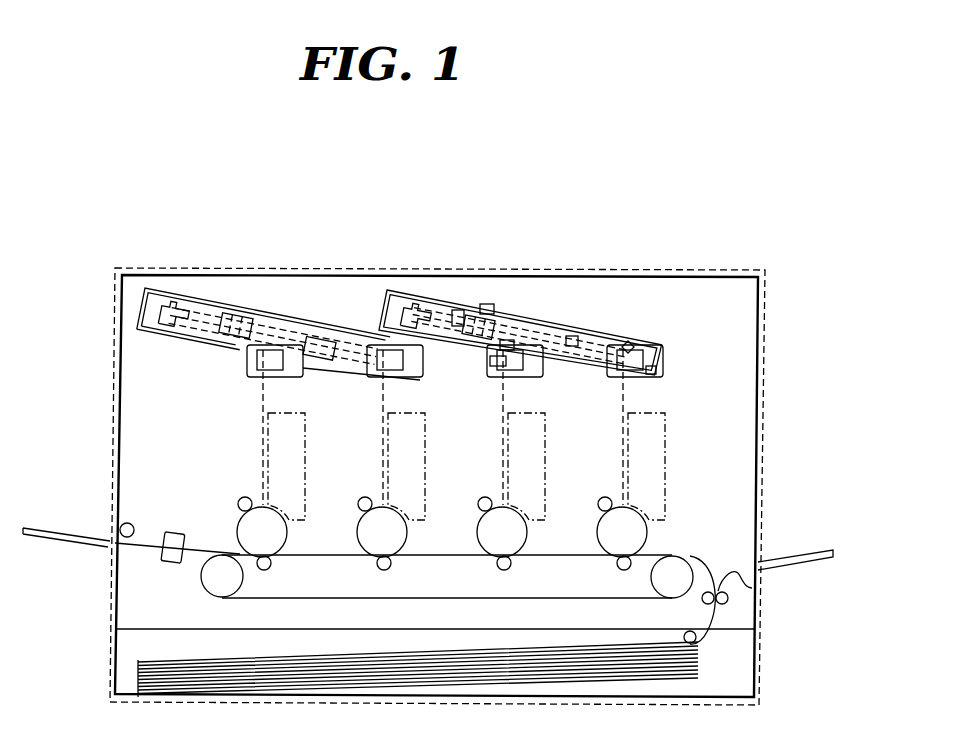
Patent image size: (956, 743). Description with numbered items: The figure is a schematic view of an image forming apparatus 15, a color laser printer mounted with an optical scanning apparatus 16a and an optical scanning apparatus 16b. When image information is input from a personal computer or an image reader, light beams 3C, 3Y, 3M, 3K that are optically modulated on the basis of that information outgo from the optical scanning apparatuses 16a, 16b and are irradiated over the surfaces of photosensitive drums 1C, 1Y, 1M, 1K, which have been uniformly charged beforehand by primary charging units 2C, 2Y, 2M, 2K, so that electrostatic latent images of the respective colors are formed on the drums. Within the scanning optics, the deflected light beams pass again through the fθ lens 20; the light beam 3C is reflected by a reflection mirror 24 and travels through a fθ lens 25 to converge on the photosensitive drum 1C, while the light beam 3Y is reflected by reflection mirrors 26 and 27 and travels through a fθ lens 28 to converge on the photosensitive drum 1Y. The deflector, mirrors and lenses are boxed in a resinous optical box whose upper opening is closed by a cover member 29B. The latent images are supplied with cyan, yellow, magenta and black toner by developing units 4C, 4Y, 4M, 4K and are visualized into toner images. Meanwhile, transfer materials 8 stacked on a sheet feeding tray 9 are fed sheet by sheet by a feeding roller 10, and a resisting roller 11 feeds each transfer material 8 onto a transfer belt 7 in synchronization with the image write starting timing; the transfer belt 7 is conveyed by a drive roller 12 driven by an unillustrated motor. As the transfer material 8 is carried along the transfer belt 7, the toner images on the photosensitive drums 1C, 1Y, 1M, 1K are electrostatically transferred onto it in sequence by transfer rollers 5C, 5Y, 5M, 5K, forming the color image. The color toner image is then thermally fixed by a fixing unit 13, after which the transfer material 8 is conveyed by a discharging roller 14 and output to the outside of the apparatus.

The photosensitive drum 1K is at (286, 537).
The photosensitive drum 1M is at (406, 538).
The photosensitive drum 1Y is at (526, 538).
The photosensitive drum 1C is at (646, 538).
The primary charging unit 2K is at (240, 497).
The primary charging unit 2M is at (360, 498).
The primary charging unit 2Y is at (480, 498).
The primary charging unit 2C is at (600, 498).
The light beam 3K is at (266, 397).
The light beam 3M is at (386, 397).
The light beam 3Y is at (506, 397).
The light beam 3C is at (626, 397).
The developing unit 4K is at (303, 429).
The developing unit 4M is at (423, 429).
The developing unit 4Y is at (543, 434).
The developing unit 4C is at (663, 439).
The transfer roller 5K is at (262, 571).
The transfer roller 5M is at (382, 571).
The transfer roller 5Y is at (502, 571).
The transfer roller 5C is at (622, 571).
The transfer belt 7 is at (540, 604).
The transfer material 8 is at (158, 662).
The sheet feeding tray 9 is at (118, 692).
The feeding roller 10 is at (682, 638).
The resisting roller 11 is at (752, 588).
The drive roller 12 is at (203, 578).
The fixing unit 13 is at (173, 531).
The discharging roller 14 is at (129, 522).
The image forming apparatus 15 is at (409, 293).
The optical scanning apparatus 16a is at (664, 353).
The optical scanning apparatus 16b is at (140, 288).
The fθ lens 20 is at (492, 308).
The reflection mirror 24 is at (634, 345).
The fθ lens 25 is at (658, 374).
The reflection mirror 26 is at (572, 340).
The reflection mirror 27 is at (508, 343).
The fθ lens 28 is at (497, 360).
The cover member 29B is at (458, 308).